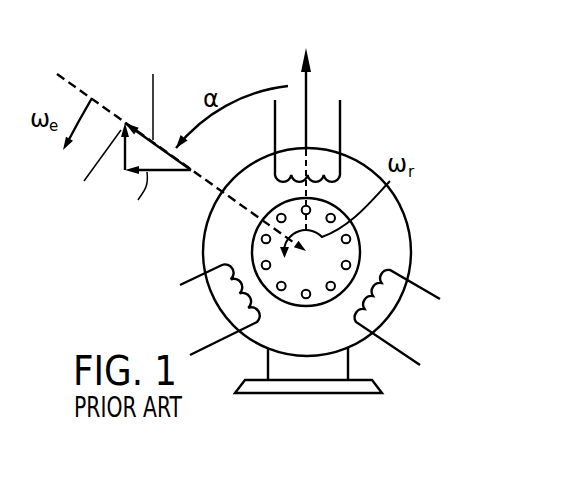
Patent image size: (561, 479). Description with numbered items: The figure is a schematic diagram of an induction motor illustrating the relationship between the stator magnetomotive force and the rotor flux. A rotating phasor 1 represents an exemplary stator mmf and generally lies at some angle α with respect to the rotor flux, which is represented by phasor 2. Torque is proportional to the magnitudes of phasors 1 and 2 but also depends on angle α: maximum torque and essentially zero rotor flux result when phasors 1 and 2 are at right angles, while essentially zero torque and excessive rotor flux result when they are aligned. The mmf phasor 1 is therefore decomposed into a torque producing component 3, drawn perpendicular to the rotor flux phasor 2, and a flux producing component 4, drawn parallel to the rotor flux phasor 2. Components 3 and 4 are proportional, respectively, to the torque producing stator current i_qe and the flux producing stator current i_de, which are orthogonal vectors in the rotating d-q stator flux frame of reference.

The rotating phasor 1 is at (147, 134).
The rotor flux phasor 2 is at (307, 87).
The torque producing component 3 is at (164, 172).
The flux producing component 4 is at (124, 162).